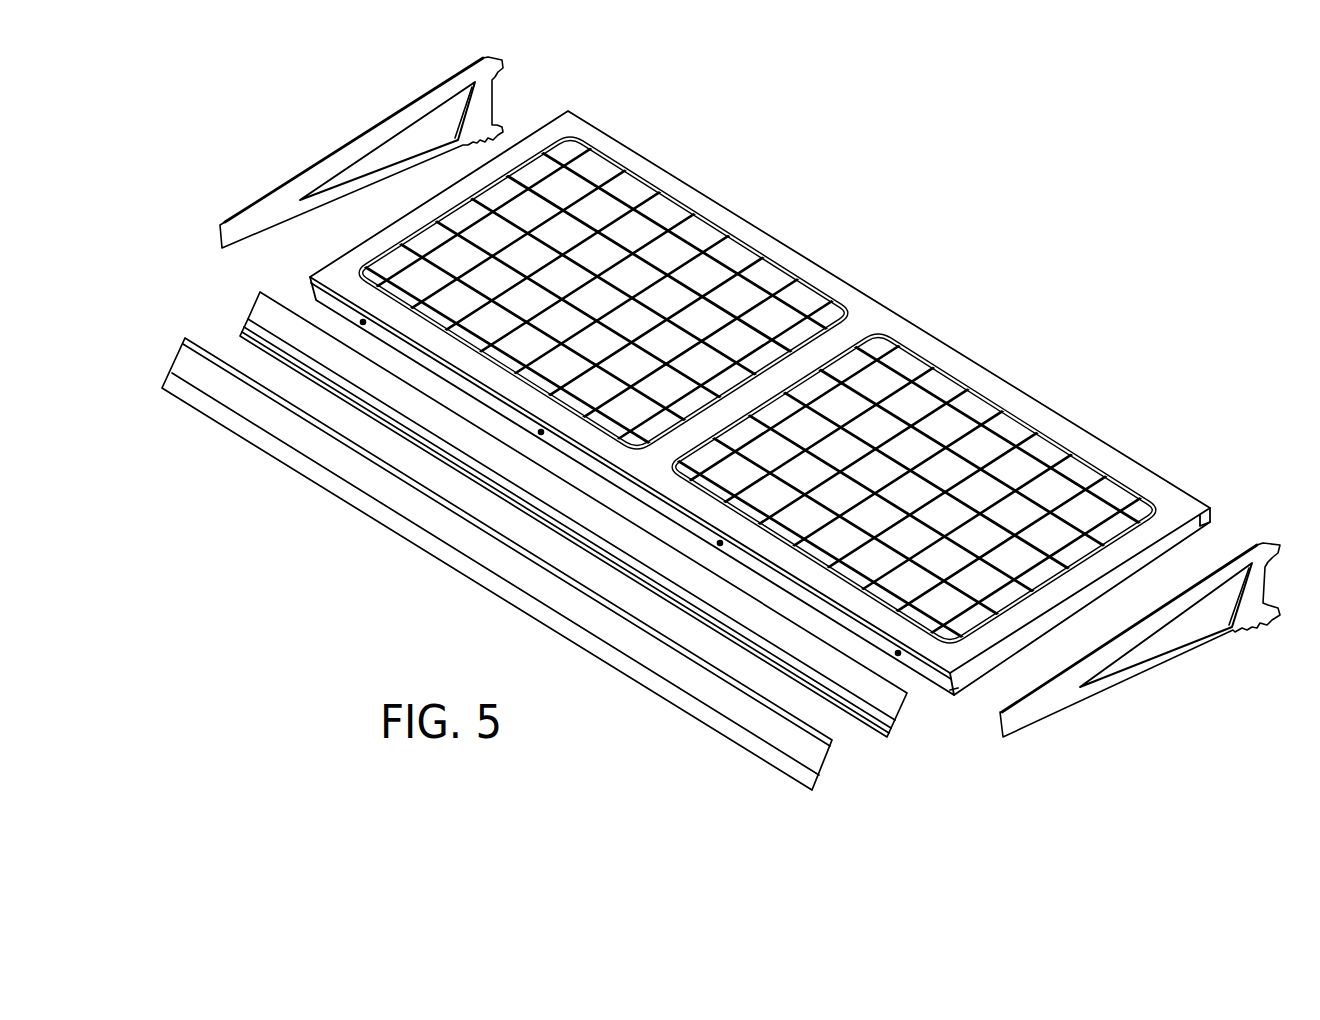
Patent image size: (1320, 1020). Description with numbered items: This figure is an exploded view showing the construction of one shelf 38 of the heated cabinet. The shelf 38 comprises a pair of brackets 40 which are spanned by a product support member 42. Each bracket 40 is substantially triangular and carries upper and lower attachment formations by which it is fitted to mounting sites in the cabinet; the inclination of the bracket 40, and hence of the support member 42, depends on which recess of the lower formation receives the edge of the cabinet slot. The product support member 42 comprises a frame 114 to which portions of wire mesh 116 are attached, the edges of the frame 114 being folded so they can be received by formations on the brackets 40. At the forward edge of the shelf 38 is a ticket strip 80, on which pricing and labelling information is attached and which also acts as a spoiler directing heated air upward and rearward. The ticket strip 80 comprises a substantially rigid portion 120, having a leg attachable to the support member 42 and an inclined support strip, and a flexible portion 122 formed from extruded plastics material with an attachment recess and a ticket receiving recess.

The shelf 38 is at (815, 387).
The bracket 40 is at (268, 207).
The product support member 42 is at (1083, 430).
The ticket strip 80 is at (506, 549).
The frame 114 is at (870, 318).
The wire mesh 116 is at (697, 248).
The rigid portion 120 is at (252, 316).
The flexible portion 122 is at (172, 366).